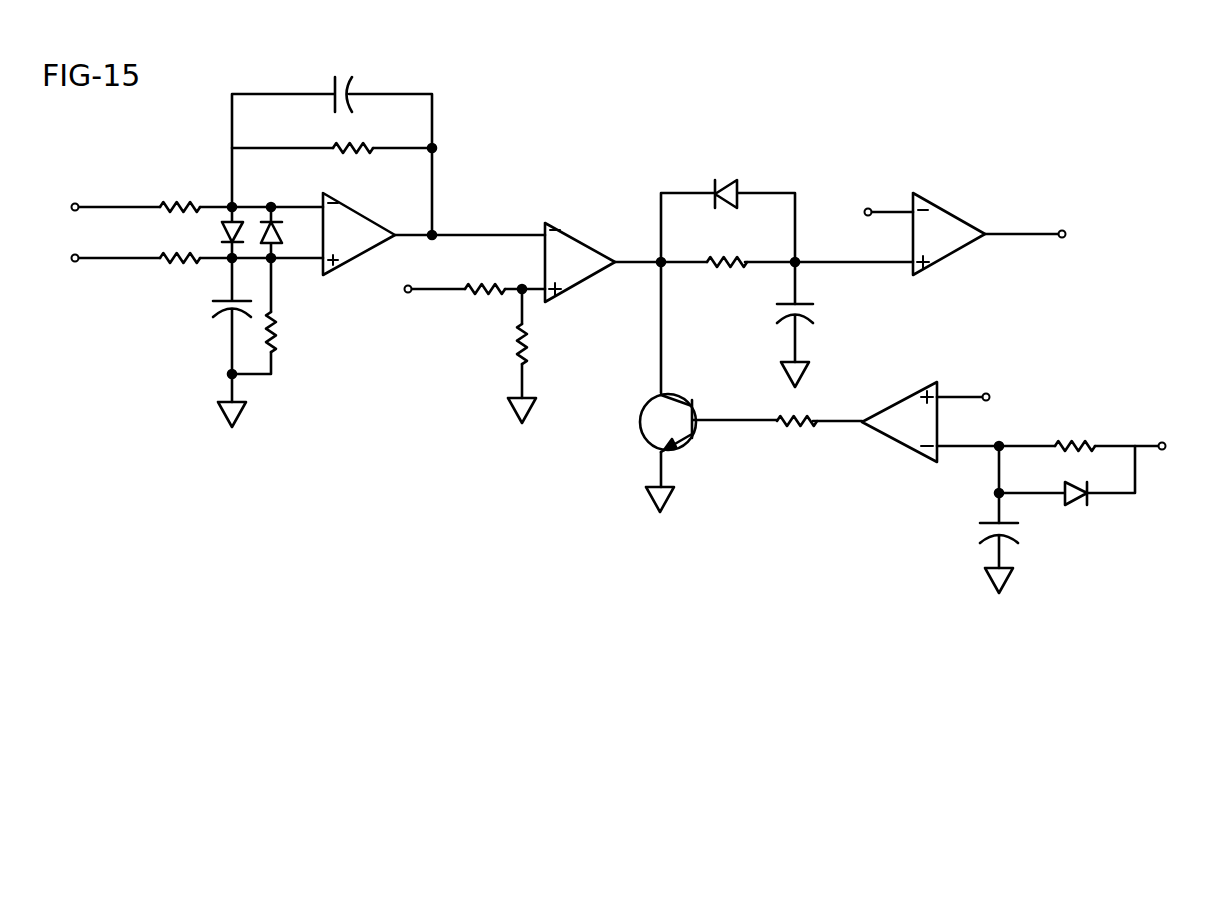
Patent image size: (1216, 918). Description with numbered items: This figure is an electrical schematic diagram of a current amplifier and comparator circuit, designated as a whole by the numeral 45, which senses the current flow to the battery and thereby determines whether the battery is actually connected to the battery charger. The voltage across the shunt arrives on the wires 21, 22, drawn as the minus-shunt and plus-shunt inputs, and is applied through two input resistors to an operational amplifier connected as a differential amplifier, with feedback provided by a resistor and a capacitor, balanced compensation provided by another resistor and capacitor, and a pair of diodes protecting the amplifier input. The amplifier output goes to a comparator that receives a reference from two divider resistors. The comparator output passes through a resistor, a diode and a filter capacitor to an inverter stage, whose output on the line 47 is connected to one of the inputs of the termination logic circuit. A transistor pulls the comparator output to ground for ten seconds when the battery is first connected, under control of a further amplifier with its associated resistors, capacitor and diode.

The wire 21 is at (133, 206).
The wire 22 is at (129, 257).
The amplifier circuit 45 is at (144, 107).
The line 47 is at (1035, 236).